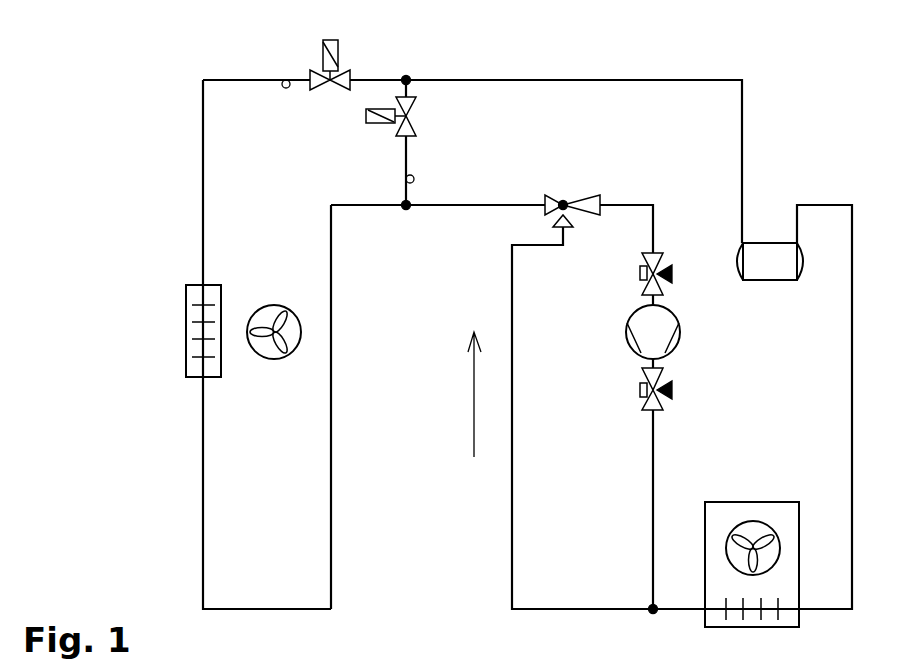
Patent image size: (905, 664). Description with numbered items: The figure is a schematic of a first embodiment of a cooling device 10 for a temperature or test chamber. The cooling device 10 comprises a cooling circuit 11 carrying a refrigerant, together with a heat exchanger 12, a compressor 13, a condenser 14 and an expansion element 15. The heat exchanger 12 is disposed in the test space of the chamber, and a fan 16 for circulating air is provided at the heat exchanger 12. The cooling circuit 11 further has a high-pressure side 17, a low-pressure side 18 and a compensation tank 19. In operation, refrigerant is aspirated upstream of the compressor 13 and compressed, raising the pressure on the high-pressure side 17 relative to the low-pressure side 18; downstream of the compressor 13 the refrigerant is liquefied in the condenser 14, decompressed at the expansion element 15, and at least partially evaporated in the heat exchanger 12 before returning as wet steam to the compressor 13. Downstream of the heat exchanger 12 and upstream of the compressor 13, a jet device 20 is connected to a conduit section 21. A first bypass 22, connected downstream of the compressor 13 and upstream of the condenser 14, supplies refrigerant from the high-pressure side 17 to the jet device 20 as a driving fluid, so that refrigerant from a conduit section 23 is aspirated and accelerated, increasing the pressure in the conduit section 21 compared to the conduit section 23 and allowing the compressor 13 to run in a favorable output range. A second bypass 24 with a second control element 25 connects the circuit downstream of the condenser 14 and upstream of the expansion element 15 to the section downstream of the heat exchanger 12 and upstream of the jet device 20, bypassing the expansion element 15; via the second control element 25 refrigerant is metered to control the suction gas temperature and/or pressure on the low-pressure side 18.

The cooling device 10 is at (147, 73).
The cooling circuit 11 is at (195, 153).
The heat exchanger 12 is at (195, 333).
The compressor 13 is at (652, 332).
The condenser 14 is at (753, 515).
The expansion element 15 is at (345, 67).
The fan 16 is at (267, 320).
The high-pressure side 17 is at (578, 78).
The low-pressure side 18 is at (332, 372).
The compensation tank 19 is at (772, 260).
The jet device 20 is at (587, 200).
The conduit section 21 is at (628, 200).
The first bypass 22 is at (513, 500).
The conduit section 23 is at (452, 200).
The second bypass 24 is at (404, 171).
The second control element 25 is at (387, 133).